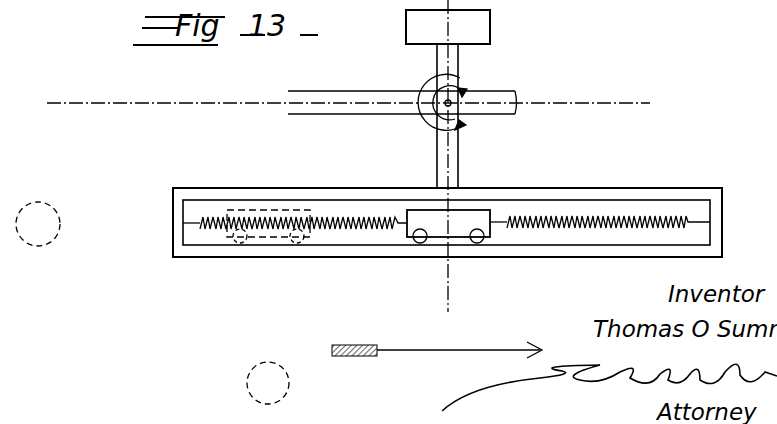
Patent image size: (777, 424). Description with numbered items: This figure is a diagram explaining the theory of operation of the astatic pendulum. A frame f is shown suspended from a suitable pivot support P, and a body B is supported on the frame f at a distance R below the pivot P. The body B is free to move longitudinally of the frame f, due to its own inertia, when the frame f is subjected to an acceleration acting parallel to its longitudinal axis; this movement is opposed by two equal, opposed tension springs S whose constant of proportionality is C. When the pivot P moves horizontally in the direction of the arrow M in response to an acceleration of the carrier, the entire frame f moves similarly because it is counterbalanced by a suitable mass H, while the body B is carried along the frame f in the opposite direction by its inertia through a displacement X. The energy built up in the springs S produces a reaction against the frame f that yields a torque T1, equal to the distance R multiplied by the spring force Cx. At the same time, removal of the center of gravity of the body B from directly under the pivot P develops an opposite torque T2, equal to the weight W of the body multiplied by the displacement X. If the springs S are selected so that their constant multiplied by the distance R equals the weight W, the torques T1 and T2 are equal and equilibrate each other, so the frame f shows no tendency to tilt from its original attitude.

The counterbalancing mass H is at (481, 38).
The pivot support P is at (452, 105).
The spring-reaction torque T1 is at (463, 86).
The weight-displacement torque T2 is at (427, 119).
The frame f is at (718, 236).
The body B is at (483, 214).
The tension springs S is at (212, 225).
The distance from pivot R is at (102, 223).
The spring force Cx is at (183, 223).
The displacement X is at (448, 257).
The weight of body W is at (268, 215).
The direction of pivot movement M is at (437, 341).